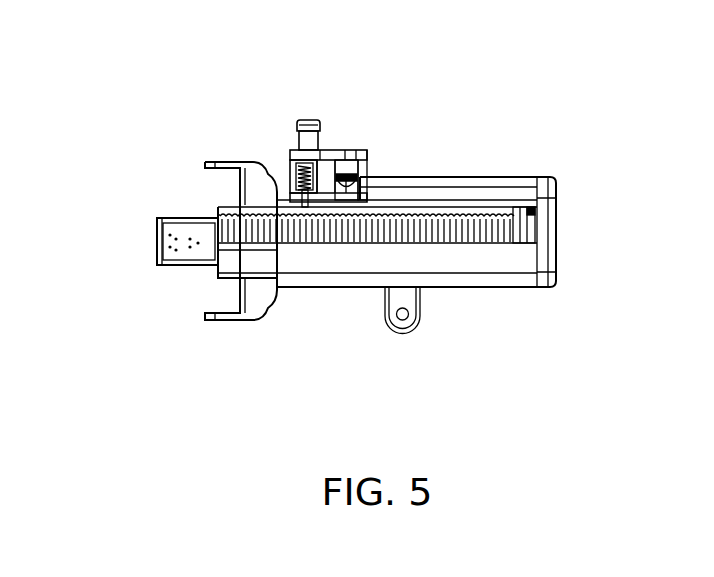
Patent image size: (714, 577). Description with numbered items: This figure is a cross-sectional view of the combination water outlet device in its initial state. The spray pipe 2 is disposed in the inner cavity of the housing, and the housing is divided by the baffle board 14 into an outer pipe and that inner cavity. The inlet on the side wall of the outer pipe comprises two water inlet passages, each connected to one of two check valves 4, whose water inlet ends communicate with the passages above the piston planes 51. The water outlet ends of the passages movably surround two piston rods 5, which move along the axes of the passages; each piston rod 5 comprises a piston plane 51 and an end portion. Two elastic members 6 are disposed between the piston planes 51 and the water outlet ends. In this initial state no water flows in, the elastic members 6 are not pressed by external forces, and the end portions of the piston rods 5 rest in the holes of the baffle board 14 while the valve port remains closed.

The spray pipe 2 is at (192, 252).
The check valve 4 is at (358, 175).
The piston rod 5 is at (312, 190).
The elastic member 6 is at (312, 170).
The baffle board 14 is at (440, 208).
The piston plane 51 is at (293, 157).